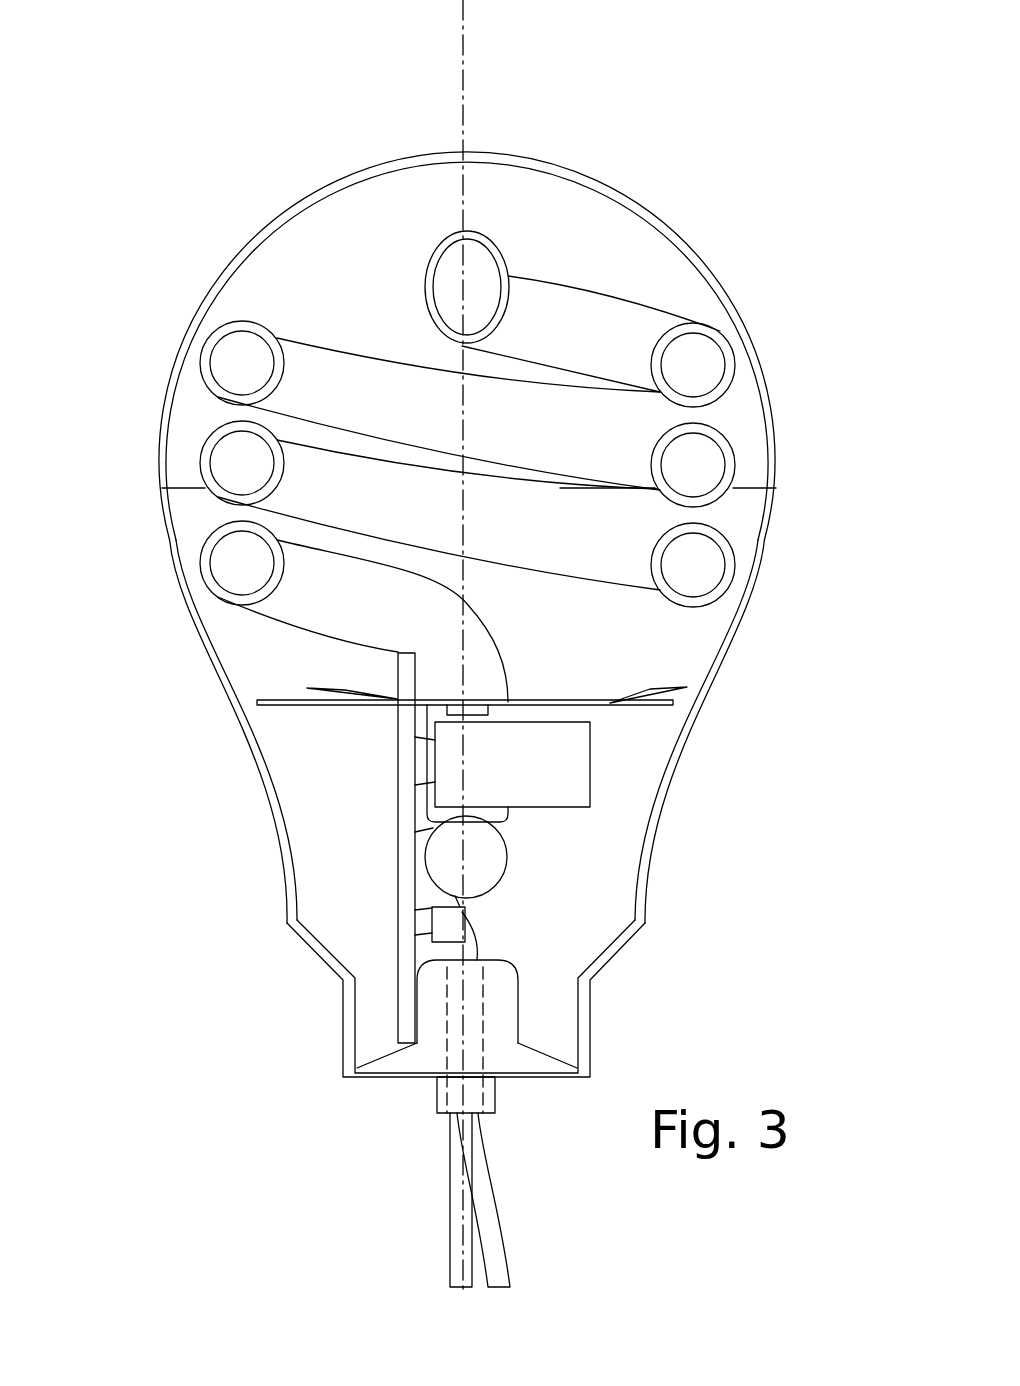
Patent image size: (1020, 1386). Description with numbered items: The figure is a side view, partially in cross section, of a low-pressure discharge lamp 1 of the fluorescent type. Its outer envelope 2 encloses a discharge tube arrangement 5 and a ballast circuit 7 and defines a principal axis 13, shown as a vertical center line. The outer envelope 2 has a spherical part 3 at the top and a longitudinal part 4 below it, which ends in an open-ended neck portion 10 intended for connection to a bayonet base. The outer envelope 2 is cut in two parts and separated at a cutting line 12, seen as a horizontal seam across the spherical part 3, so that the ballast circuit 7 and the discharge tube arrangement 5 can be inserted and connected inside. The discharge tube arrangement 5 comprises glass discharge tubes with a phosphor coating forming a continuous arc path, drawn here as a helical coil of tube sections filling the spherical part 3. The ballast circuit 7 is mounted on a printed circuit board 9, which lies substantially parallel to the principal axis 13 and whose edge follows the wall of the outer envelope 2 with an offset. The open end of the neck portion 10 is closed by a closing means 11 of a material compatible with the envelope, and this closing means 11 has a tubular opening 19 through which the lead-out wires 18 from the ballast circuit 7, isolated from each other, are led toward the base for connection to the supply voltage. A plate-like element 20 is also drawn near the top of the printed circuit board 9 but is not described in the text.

The low-pressure discharge lamp 1 is at (193, 133).
The outer envelope 2 is at (692, 248).
The spherical part 3 is at (178, 352).
The longitudinal part 4 is at (282, 827).
The discharge tube arrangement 5 is at (713, 353).
The ballast circuit 7 is at (490, 750).
The printed circuit board 9 is at (408, 878).
The neck portion 10 is at (345, 1020).
The closing means 11 is at (510, 1027).
The cutting line 12 is at (161, 489).
The principal axis 13 is at (463, 98).
The lead-out wires 18 is at (497, 1237).
The tubular opening 19 is at (480, 973).
The mounting plate 20 is at (257, 703).